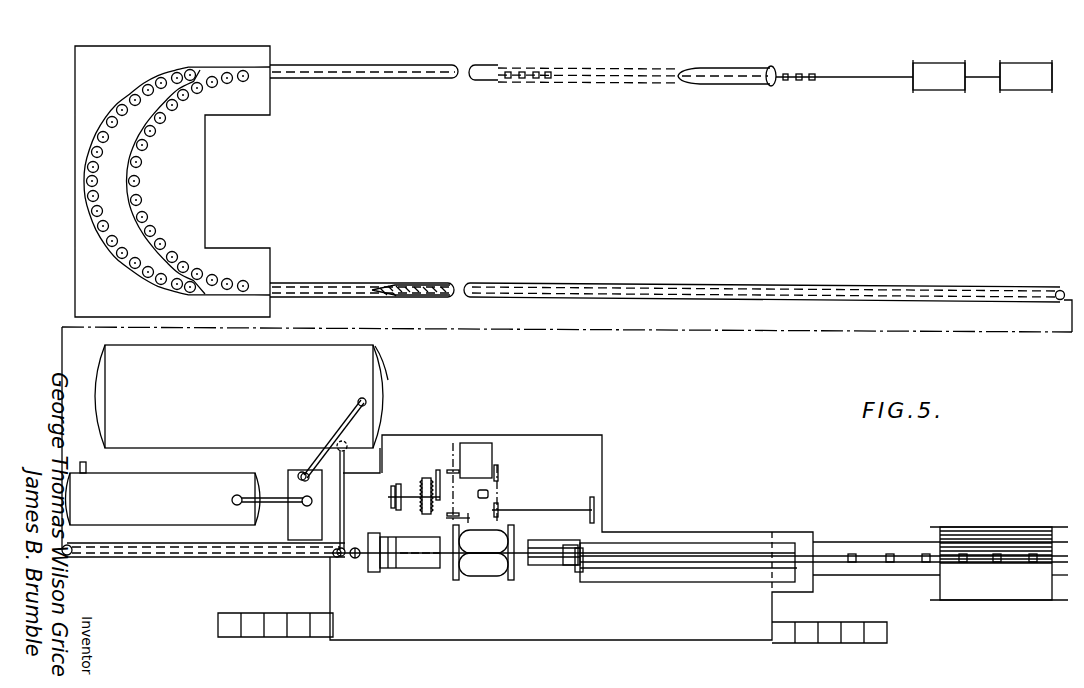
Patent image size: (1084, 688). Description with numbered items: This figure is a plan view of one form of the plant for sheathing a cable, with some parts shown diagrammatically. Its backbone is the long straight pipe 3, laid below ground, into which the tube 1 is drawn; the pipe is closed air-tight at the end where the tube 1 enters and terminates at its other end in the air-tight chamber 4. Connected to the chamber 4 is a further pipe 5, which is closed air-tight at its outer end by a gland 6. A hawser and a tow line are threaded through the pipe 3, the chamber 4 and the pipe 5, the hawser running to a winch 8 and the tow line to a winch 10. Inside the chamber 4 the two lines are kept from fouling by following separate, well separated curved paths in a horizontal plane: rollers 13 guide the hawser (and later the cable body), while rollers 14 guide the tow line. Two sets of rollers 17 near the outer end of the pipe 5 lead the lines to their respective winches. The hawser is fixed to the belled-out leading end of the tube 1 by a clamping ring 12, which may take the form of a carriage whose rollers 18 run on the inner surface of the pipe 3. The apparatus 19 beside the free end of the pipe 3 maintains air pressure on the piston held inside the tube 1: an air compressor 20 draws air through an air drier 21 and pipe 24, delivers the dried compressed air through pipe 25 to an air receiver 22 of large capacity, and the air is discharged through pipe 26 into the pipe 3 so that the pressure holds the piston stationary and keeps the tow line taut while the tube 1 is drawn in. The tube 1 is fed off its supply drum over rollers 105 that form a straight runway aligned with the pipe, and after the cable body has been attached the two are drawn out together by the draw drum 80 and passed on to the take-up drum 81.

The tube 1 is at (828, 556).
The pipe 3 is at (307, 284).
The air-tight chamber 4 is at (185, 156).
The pipe 5 is at (476, 82).
The gland 6 is at (770, 86).
The winch 8 is at (945, 92).
The winch 10 is at (1027, 92).
The clamping ring 12 is at (397, 289).
The rollers 13 is at (140, 210).
The rollers 14 is at (142, 262).
The sets of rollers 17 is at (801, 82).
The rollers 18 is at (407, 287).
The air-pressure apparatus 19 is at (375, 347).
The air compressor 20 is at (307, 532).
The air drier 21 is at (165, 510).
The air receiver 22 is at (246, 414).
The pipe 24 is at (278, 505).
The pipe 25 is at (353, 417).
The pipe 26 is at (345, 498).
The draw drum 80 is at (680, 548).
The take-up drum 81 is at (978, 585).
The rollers 105 is at (891, 553).